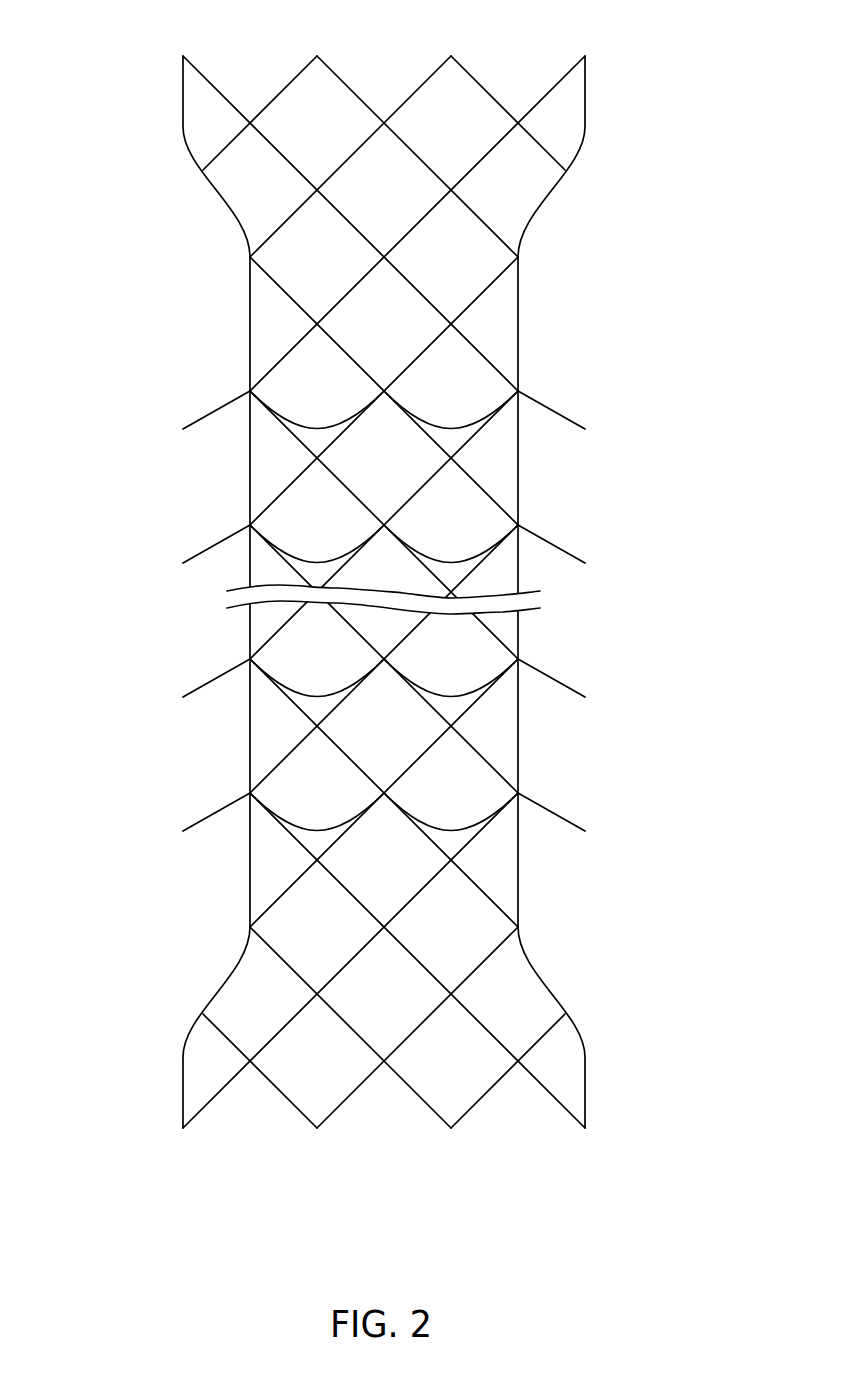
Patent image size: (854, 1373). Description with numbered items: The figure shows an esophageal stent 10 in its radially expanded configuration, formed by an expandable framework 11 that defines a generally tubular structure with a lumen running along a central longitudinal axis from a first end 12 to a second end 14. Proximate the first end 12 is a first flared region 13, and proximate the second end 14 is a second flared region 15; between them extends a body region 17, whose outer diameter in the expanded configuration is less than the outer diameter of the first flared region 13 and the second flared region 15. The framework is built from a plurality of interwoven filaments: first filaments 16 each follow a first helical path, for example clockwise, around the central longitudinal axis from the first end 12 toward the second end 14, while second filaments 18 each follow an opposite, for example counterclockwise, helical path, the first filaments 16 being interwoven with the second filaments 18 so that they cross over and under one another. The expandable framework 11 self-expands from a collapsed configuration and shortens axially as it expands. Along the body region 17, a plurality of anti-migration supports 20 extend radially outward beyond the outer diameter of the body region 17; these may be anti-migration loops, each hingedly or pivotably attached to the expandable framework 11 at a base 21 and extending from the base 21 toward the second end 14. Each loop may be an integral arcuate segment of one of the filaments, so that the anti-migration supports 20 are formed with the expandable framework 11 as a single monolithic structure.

The esophageal stent 10 is at (104, 146).
The expandable framework 11 is at (518, 333).
The first end 12 is at (618, 44).
The first flared region 13 is at (620, 114).
The second end 14 is at (628, 1107).
The second flared region 15 is at (625, 1052).
The first filaments 16 is at (343, 157).
The body region 17 is at (626, 626).
The second filaments 18 is at (420, 157).
The anti-migration supports 20 is at (217, 543).
The base 21 is at (538, 511).